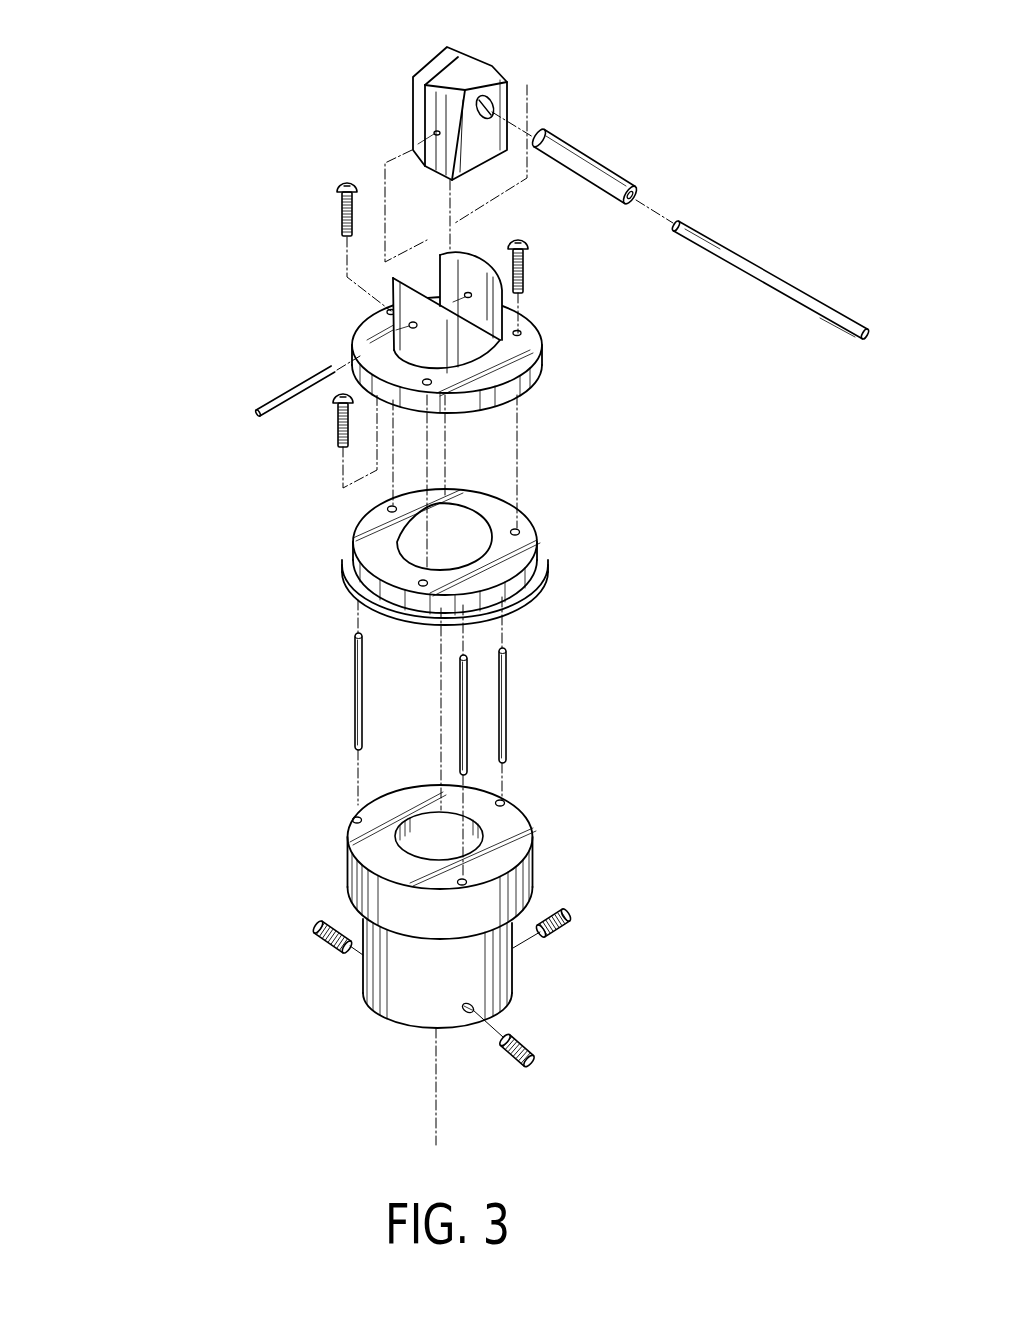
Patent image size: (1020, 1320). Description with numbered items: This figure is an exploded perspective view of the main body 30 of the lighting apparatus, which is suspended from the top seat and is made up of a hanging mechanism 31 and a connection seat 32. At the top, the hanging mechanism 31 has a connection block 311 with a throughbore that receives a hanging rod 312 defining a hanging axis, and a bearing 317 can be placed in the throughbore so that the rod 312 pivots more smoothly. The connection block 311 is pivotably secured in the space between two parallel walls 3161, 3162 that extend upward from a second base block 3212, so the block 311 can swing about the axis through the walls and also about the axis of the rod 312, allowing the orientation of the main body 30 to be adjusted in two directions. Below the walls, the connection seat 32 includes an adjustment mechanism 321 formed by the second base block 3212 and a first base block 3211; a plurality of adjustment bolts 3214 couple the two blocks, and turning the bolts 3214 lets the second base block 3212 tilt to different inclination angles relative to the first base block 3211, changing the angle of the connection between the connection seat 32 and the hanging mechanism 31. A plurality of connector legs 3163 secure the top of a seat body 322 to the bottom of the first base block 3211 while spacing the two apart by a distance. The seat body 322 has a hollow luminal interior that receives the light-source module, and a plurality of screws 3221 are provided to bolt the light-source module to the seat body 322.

The main body 30 is at (156, 178).
The hanging mechanism 31 is at (367, 115).
The connection block 311 is at (468, 64).
The bearing 317 is at (590, 163).
The hanging rod 312 is at (775, 278).
The parallel wall 3161 is at (473, 257).
The parallel wall 3162 is at (410, 326).
The connector legs 3163 is at (508, 710).
The connection seat 32 is at (95, 391).
The adjustment mechanism 321 is at (206, 418).
The first base block 3211 is at (548, 578).
The second base block 3212 is at (537, 372).
The adjustment bolts 3214 is at (338, 200).
The seat body 322 is at (368, 886).
The screws 3221 is at (316, 932).